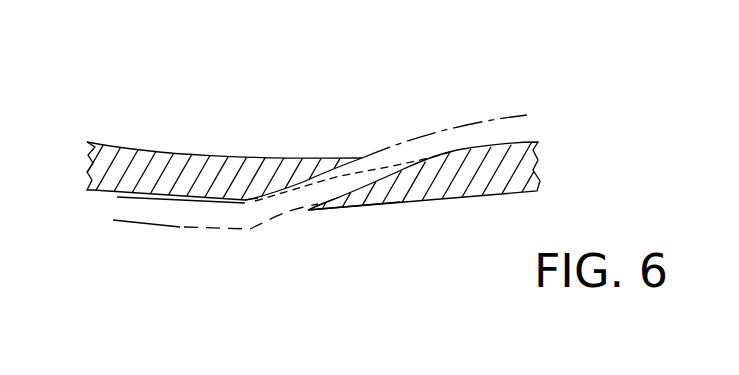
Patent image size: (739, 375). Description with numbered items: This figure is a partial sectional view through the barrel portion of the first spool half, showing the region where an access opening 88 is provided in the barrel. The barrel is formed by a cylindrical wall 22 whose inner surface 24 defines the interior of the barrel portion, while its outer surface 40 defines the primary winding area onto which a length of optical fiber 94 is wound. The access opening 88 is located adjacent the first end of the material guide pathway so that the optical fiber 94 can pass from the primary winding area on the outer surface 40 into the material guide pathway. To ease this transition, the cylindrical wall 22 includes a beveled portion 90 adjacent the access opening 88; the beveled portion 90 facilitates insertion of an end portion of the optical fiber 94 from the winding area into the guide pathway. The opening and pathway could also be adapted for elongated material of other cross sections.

The outer surface 40 is at (105, 141).
The inner surface 24 is at (94, 194).
The cylindrical wall 22 is at (540, 160).
The beveled portion 90 is at (257, 200).
The optical fiber 94 is at (308, 192).
The access opening 88 is at (329, 208).